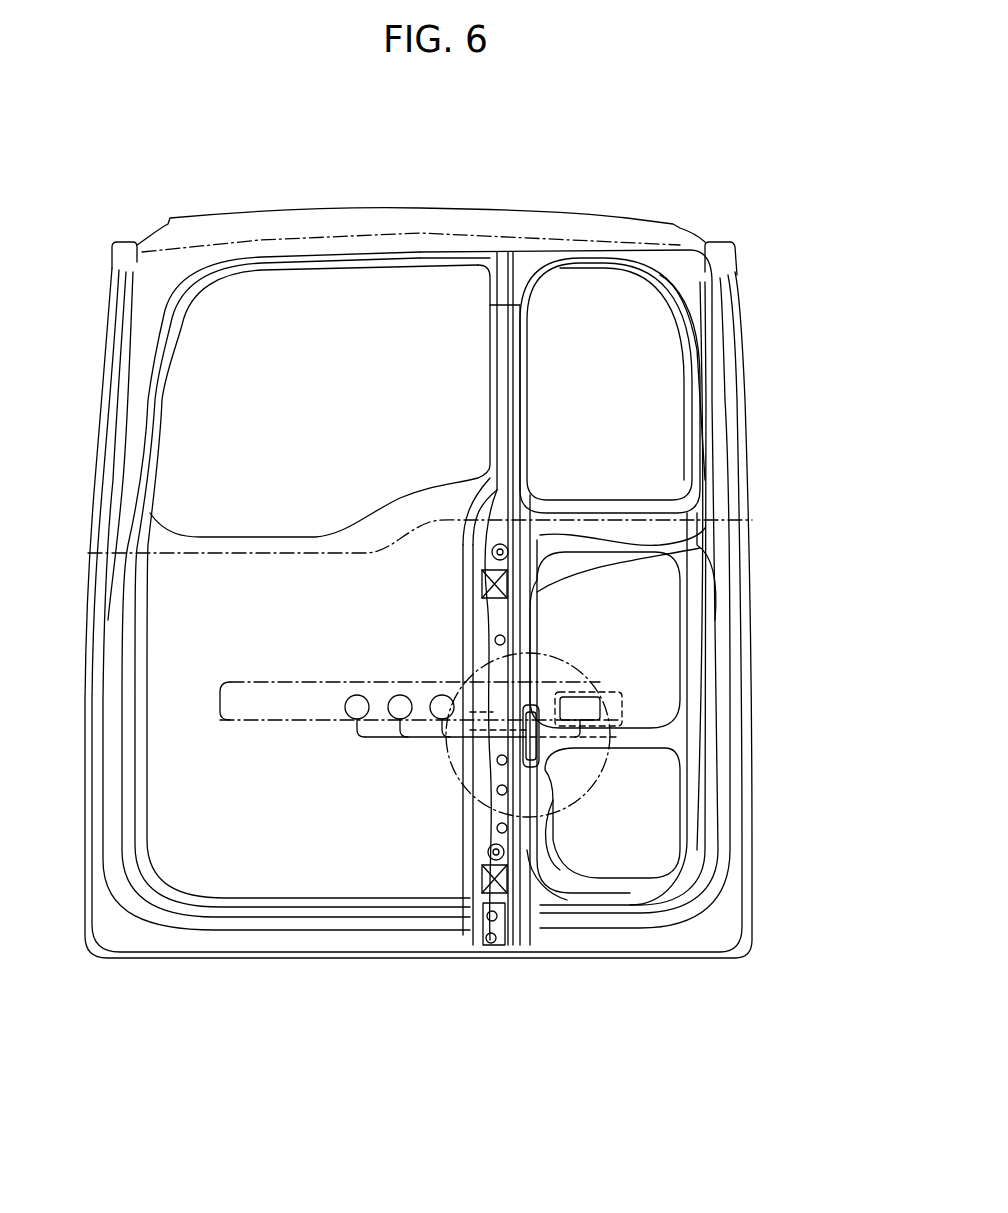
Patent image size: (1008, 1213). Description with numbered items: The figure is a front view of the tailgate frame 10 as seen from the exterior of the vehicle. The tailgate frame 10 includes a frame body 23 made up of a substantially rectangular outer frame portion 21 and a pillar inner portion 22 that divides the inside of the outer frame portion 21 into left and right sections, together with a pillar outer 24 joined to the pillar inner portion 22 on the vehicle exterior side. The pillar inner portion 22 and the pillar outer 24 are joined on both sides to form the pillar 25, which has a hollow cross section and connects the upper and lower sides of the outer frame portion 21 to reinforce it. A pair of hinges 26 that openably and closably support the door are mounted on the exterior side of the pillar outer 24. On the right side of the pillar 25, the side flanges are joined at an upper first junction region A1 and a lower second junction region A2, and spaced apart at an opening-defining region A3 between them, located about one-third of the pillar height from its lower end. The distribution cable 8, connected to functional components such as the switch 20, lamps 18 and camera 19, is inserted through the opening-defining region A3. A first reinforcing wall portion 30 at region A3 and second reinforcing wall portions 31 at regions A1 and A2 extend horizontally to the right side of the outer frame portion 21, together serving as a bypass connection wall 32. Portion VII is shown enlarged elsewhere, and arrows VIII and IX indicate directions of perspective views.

The distribution cable 8 is at (478, 758).
The tailgate frame 10 is at (706, 210).
The lamps 18 is at (353, 695).
The camera 19 is at (397, 695).
The switch 20 is at (598, 693).
The outer frame portion 21 is at (322, 226).
The pillar inner portion 22 is at (525, 393).
The frame body 23 is at (447, 226).
The pillar outer 24 is at (525, 340).
The pillar 25 is at (808, 282).
The hinges 26 is at (507, 592).
The first reinforcing wall portion 30 is at (633, 742).
The second reinforcing wall portions 31 is at (632, 535).
The bypass connection wall 32 is at (690, 597).
The first junction region A1 is at (520, 623).
The second junction region A2 is at (527, 850).
The opening-defining region A3 is at (560, 757).
The portion VII is at (618, 779).
The arrow VIII is at (662, 839).
The arrow IX is at (360, 763).